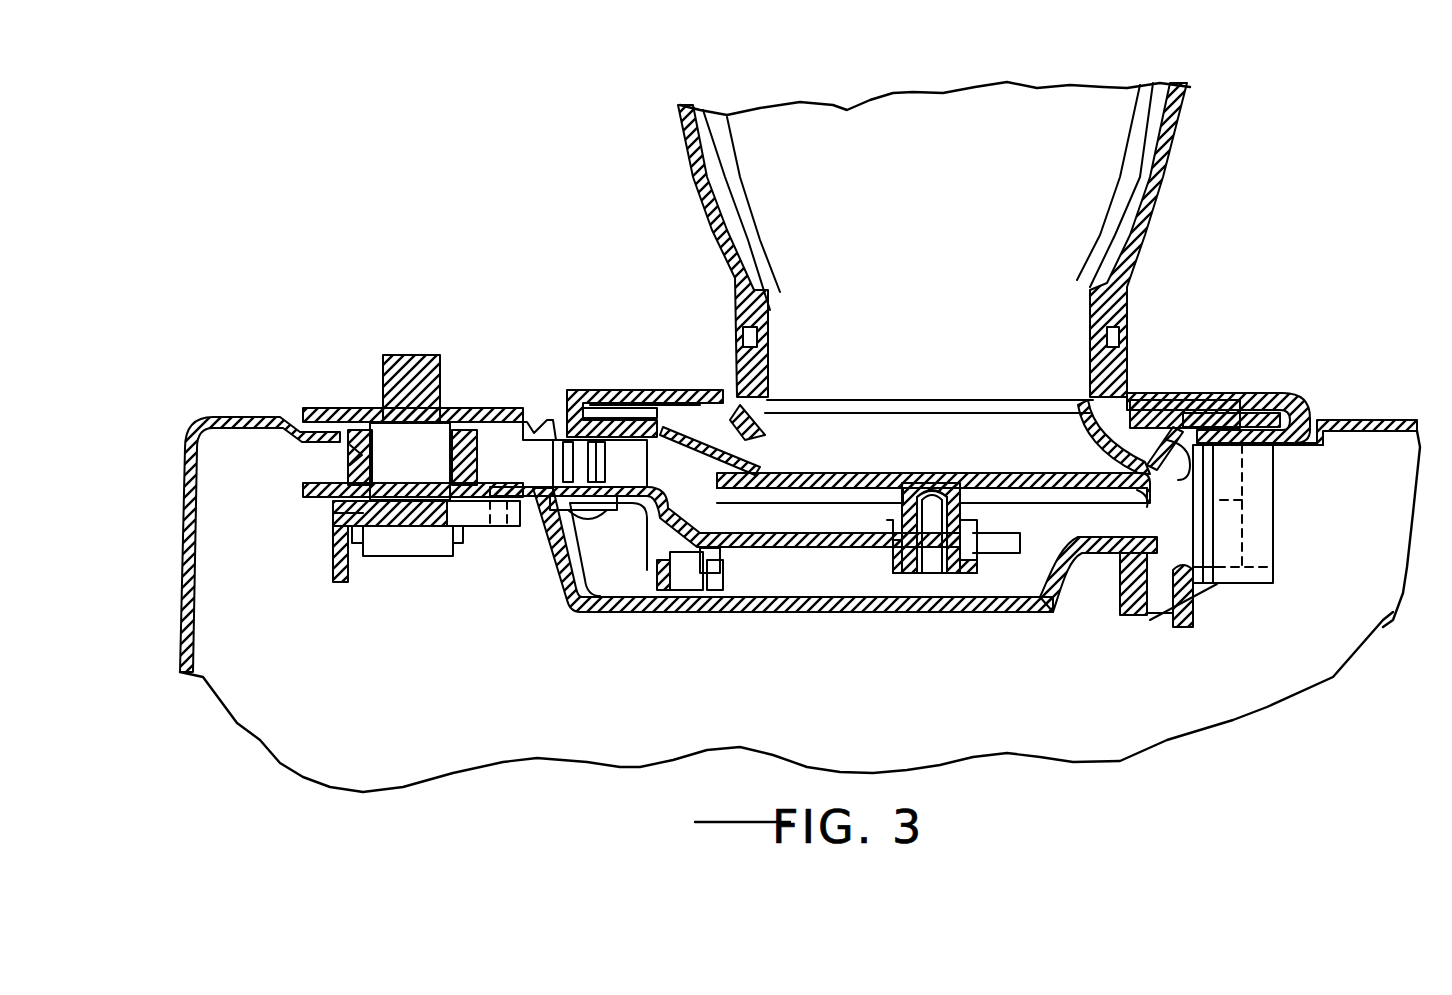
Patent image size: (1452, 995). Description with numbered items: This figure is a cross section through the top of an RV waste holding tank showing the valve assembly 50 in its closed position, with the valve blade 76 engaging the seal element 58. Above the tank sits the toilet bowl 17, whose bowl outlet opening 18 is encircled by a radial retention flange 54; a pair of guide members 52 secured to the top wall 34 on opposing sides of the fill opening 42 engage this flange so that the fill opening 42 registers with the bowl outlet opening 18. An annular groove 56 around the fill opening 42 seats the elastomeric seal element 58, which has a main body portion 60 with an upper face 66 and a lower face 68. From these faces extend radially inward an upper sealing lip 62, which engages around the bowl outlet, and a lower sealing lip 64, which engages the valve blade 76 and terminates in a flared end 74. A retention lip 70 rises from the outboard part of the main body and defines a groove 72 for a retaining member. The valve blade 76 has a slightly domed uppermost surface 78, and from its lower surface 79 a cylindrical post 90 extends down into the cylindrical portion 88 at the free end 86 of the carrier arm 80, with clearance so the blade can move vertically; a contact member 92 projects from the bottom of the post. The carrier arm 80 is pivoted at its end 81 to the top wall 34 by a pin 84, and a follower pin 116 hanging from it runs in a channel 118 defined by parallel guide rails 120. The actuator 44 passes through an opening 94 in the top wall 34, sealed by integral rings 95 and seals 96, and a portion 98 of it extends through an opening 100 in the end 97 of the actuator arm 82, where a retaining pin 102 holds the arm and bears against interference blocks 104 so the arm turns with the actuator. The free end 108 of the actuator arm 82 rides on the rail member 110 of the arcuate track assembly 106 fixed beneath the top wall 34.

The toilet bowl 17 is at (1162, 147).
The bowl outlet opening 18 is at (1088, 365).
The top wall 34 is at (230, 412).
The fill opening 42 is at (775, 410).
The actuator 44 is at (415, 355).
The valve assembly 50 is at (515, 660).
The guide members 52 is at (640, 390).
The radial retention flange 54 is at (715, 395).
The annular groove 56 is at (677, 456).
The seal element 58 is at (1075, 410).
The main body portion 60 is at (1178, 483).
The upper sealing lip 62 is at (785, 400).
The lower sealing lip 64 is at (760, 470).
The upper face 66 is at (700, 400).
The lower face 68 is at (662, 522).
The retention lip 70 is at (1265, 410).
The groove 72 is at (1215, 400).
The flared end 74 is at (790, 476).
The valve blade 76 is at (805, 499).
The uppermost surface 78 is at (890, 472).
The lower surface 79 is at (1075, 492).
The carrier arm 80 is at (805, 552).
The end 81 is at (555, 490).
The actuator arm 82 is at (830, 614).
The pin 84 is at (562, 572).
The free end 86 is at (1012, 541).
The cylindrical portion 88 is at (895, 563).
The cylindrical post 90 is at (872, 496).
The contact member 92 is at (905, 586).
The opening 94 is at (353, 415).
The integral rings 95 is at (475, 440).
The seals 96 is at (340, 470).
The end 97 is at (318, 500).
The portion 98 is at (455, 560).
The opening 100 is at (340, 526).
The retaining pin 102 is at (340, 556).
The interference blocks 104 is at (357, 546).
The track assembly 106 is at (1290, 516).
The free end 108 is at (1082, 557).
The rail member 110 is at (1195, 628).
The pin 116 is at (685, 594).
The channel 118 is at (705, 594).
The guide rails 120 is at (725, 569).